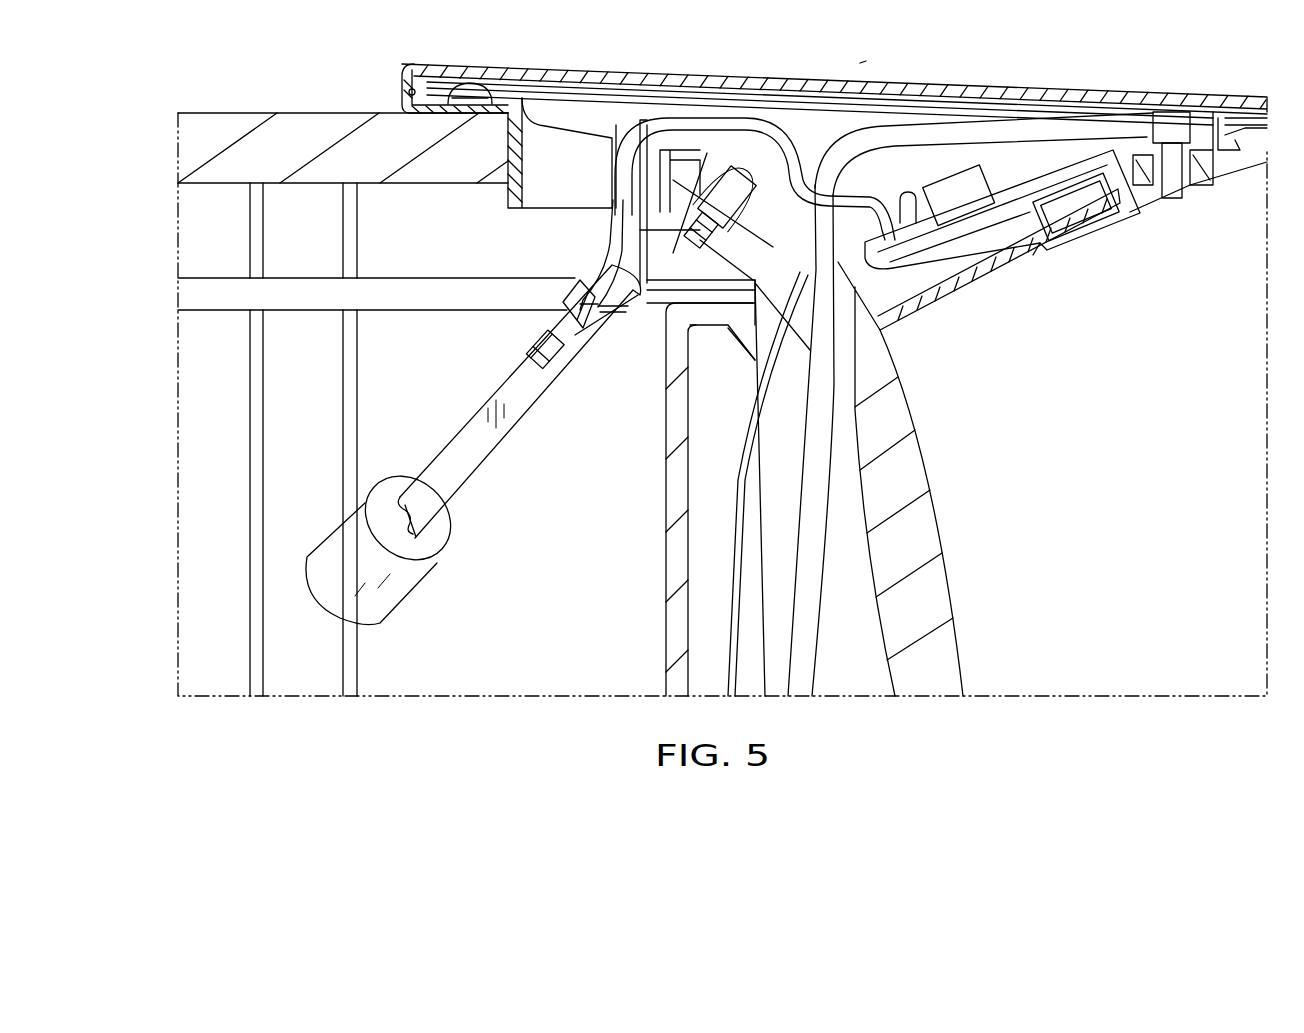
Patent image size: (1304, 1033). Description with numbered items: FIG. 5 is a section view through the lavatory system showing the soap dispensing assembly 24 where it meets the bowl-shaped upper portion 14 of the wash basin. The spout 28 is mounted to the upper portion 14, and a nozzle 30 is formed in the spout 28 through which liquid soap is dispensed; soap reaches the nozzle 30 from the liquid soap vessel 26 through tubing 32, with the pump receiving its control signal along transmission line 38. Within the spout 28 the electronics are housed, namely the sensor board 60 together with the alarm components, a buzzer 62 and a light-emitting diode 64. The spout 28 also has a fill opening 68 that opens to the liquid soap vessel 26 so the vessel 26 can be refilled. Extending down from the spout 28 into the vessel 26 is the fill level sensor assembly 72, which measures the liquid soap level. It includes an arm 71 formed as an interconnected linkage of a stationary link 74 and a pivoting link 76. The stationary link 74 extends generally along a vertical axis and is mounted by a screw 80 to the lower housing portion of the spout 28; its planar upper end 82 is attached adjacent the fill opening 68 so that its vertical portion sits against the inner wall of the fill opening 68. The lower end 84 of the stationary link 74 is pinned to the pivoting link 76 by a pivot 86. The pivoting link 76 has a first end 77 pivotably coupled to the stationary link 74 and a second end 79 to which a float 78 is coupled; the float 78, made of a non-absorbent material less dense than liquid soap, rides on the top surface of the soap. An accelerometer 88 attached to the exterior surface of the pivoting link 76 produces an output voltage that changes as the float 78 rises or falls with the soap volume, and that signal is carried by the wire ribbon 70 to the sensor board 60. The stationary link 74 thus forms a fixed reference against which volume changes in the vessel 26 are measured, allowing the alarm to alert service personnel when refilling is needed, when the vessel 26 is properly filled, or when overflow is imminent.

The upper portion 14 is at (318, 125).
The soap dispensing assembly 24 is at (866, 60).
The spout 28 is at (783, 120).
The tubing 32 is at (923, 132).
The fill opening 68 is at (575, 122).
The planar upper end 82 is at (629, 128).
The screw 80 is at (700, 122).
The buzzer 62 is at (985, 178).
The light-emitting diode 64 is at (905, 195).
The sensor board 60 is at (1068, 210).
The nozzle 30 is at (1172, 200).
The wire ribbon 70 is at (607, 268).
The arm 71 is at (576, 266).
The stationary link 74 is at (632, 227).
The accelerometer 88 is at (535, 352).
The lower end 84 is at (652, 300).
The pivot 86 is at (618, 283).
The first end 77 is at (700, 327).
The pivoting link 76 is at (518, 408).
The second end 79 is at (417, 493).
The transmission line 38 is at (740, 478).
The liquid soap vessel 26 is at (688, 569).
The fill level sensor assembly 72 is at (545, 485).
The float 78 is at (373, 582).